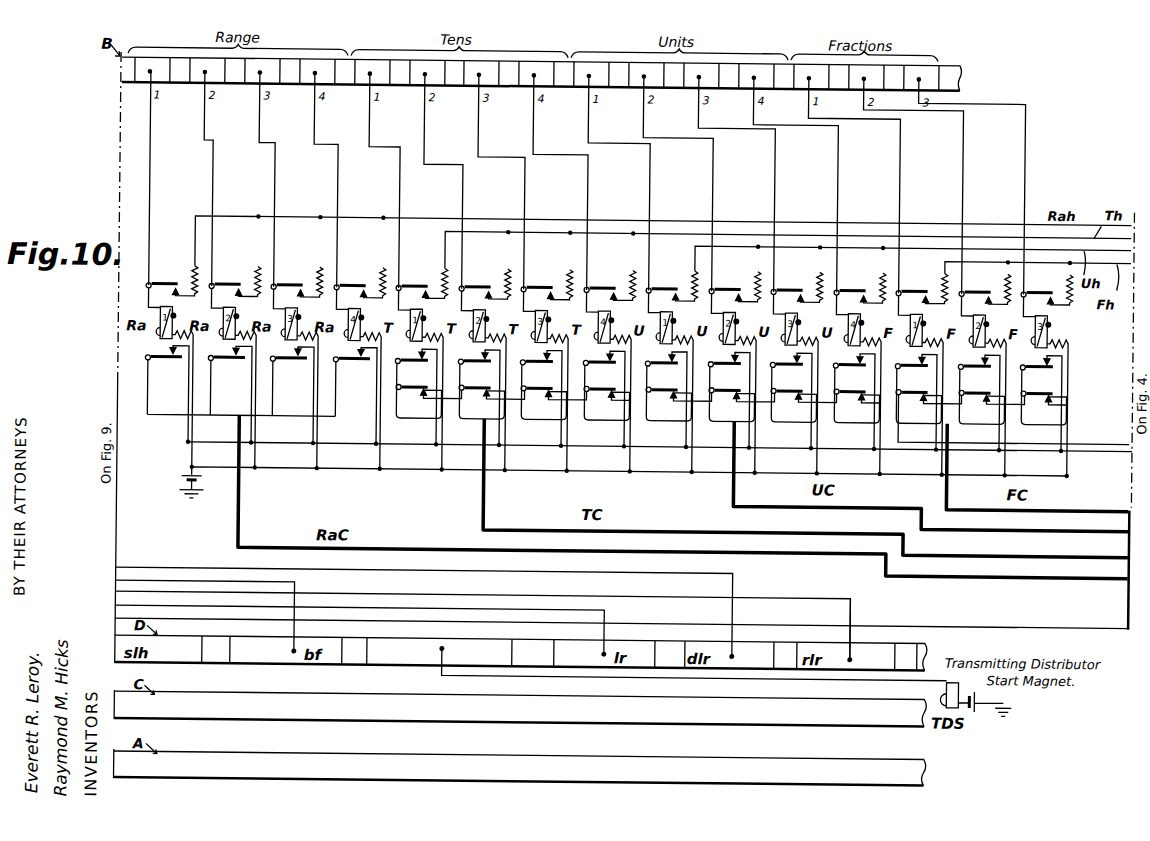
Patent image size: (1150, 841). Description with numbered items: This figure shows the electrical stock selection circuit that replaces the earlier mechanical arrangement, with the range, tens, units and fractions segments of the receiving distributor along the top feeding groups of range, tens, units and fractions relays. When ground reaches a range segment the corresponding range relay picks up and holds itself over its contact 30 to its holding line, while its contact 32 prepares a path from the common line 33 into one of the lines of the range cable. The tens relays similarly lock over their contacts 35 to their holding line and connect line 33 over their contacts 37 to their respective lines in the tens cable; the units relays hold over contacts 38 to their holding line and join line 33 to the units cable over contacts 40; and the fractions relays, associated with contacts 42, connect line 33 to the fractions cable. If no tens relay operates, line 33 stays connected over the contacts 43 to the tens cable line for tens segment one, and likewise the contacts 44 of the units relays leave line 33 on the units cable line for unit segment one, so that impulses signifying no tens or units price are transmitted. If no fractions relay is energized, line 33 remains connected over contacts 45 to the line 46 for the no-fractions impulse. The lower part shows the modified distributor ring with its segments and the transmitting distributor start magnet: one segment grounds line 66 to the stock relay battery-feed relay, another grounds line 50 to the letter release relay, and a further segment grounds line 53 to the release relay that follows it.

The holding contact of range relay 30 is at (266, 281).
The contact of range relay 32 is at (262, 395).
The line 33 is at (1091, 447).
The holding contact of tens relay 35 is at (516, 284).
The contact of tens relay 37 is at (510, 399).
The holding contact of units relay 38 is at (734, 287).
The contact of units relay 40 is at (858, 362).
The contact of fractions relay 42 is at (979, 403).
The contact of tens relay 43 is at (513, 400).
The contact of units relay 44 is at (763, 401).
The contact of fractions relay 45 is at (981, 404).
The line 46 is at (1092, 437).
The line 50 is at (609, 609).
The line 53 is at (856, 596).
The line 66 is at (300, 583).